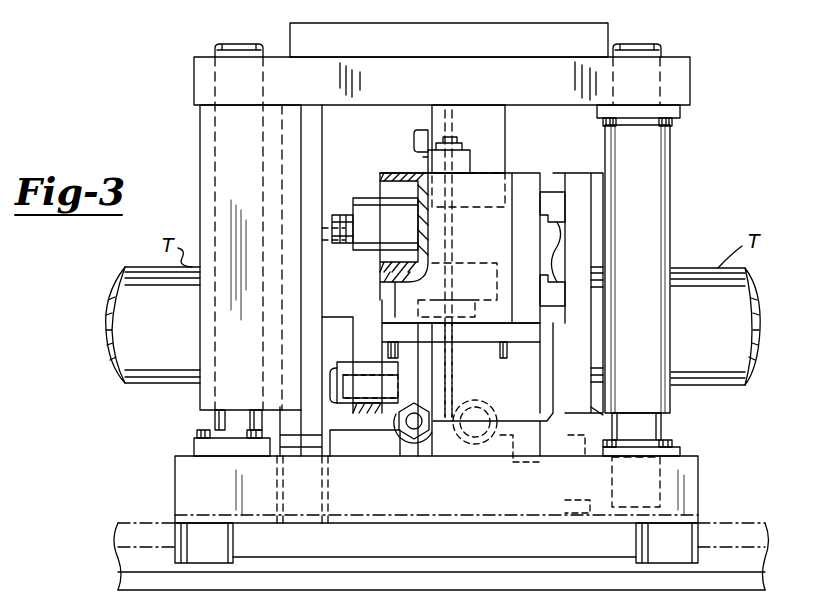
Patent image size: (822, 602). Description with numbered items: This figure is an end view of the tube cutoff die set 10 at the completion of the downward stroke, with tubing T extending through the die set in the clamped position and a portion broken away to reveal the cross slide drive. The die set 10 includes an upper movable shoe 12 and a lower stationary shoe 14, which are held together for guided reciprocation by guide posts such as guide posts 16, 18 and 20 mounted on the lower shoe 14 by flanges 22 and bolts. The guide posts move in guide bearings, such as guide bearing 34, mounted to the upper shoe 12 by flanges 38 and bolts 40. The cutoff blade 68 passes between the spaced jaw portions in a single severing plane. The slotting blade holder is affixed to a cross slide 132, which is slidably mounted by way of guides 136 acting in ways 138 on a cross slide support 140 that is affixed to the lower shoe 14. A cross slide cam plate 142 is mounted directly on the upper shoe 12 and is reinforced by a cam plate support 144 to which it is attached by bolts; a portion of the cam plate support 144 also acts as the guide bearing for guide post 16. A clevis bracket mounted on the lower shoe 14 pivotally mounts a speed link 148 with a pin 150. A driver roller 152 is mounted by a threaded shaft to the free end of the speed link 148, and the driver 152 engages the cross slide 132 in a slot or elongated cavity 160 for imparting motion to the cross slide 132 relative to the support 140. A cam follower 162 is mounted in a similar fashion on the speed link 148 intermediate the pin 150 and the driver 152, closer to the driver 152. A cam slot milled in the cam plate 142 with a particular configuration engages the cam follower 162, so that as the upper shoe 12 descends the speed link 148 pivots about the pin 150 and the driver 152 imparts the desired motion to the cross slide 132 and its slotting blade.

The tube cutoff die set 10 is at (712, 65).
The upper movable shoe 12 is at (690, 88).
The lower stationary shoe 14 is at (698, 494).
The guide post 16 is at (226, 46).
The guide post 18 is at (658, 44).
The guide post 20 is at (194, 444).
The flanges 22 is at (680, 448).
The guide bearing 34 is at (672, 194).
The flanges 38 is at (682, 122).
The bolts 40 is at (674, 126).
The cutoff blade 68 is at (458, 190).
The cross slide 132 is at (527, 172).
The guides 136 is at (557, 250).
The ways 138 is at (552, 192).
The cross slide support 140 is at (560, 388).
The cross slide cam plate 142 is at (322, 121).
The cam plate support 144 is at (200, 146).
The speed link 148 is at (345, 328).
The pin 150 is at (381, 389).
The driver roller 152 is at (408, 224).
The slot or elongated cavity 160 is at (380, 178).
The cam follower 162 is at (318, 318).